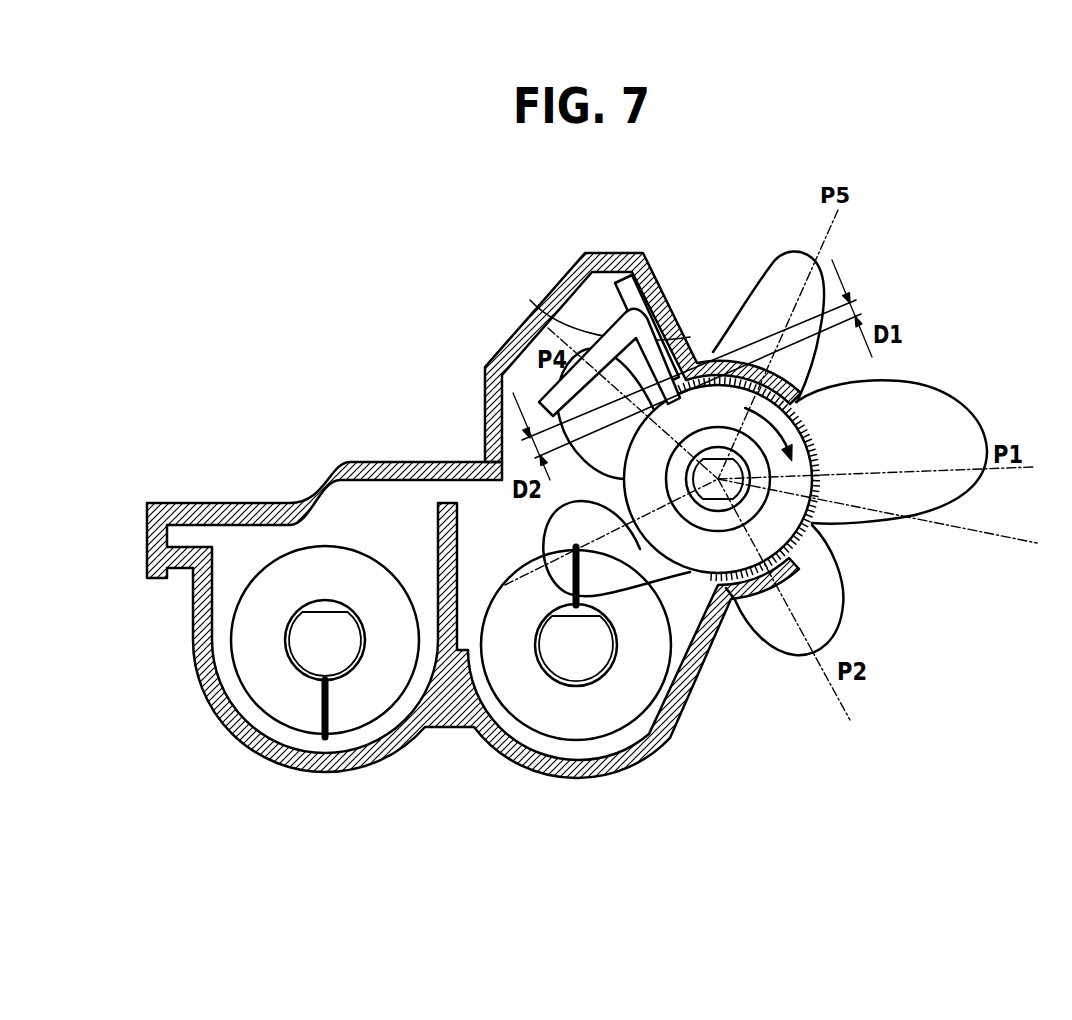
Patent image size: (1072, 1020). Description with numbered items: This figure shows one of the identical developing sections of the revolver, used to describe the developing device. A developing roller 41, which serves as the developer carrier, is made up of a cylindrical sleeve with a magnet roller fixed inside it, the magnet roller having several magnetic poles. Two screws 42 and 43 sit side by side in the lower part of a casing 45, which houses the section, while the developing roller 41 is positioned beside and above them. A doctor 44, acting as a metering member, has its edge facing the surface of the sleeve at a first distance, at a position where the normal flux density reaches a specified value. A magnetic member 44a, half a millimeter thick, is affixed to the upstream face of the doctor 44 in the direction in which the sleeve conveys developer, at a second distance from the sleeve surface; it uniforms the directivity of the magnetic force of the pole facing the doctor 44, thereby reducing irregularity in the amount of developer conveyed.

The developing roller 41 is at (697, 557).
The screw 42 is at (563, 722).
The screw 43 is at (302, 722).
The doctor 44 is at (665, 303).
The magnetic member 44a is at (593, 343).
The casing 45 is at (217, 712).